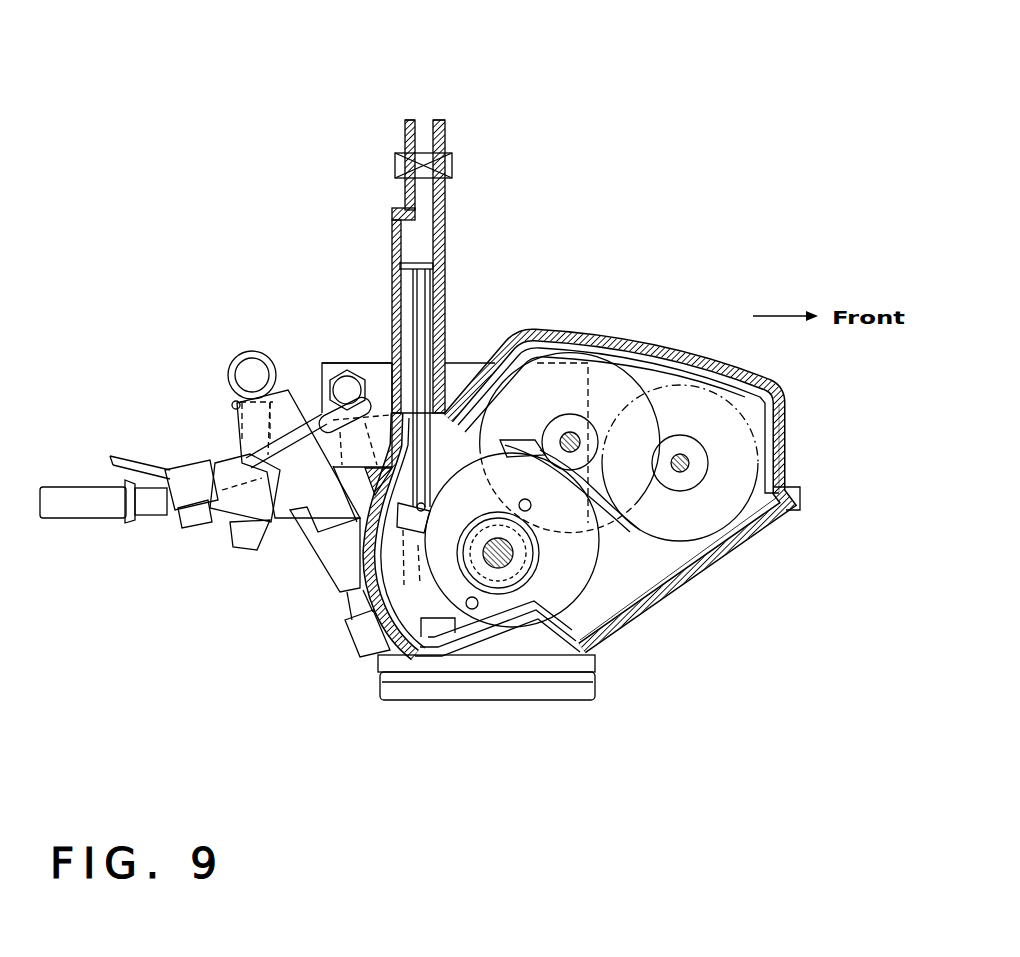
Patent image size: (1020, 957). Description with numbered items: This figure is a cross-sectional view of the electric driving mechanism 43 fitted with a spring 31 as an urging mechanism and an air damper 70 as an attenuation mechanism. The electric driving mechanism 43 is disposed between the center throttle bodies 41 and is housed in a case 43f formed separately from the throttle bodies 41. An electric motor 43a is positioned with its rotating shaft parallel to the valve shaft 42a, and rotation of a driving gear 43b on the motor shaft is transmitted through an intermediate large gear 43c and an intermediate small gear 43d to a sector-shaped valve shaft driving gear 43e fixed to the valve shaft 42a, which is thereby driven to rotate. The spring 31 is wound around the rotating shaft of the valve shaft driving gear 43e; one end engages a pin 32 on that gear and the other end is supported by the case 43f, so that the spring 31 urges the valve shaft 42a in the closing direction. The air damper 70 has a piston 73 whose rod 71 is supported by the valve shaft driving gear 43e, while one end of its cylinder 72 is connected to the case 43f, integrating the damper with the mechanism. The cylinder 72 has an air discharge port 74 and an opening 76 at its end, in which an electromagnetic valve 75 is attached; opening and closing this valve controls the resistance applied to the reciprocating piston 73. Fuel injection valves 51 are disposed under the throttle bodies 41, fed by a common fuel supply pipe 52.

The spring 31 is at (568, 693).
The pin 32 is at (598, 697).
The throttle body 41 is at (372, 684).
The valve shaft 42a is at (498, 575).
The electric driving mechanism 43 is at (700, 356).
The electric motor 43a is at (672, 545).
The driving gear 43b is at (742, 535).
The intermediate large gear 43c is at (533, 332).
The intermediate small gear 43d is at (495, 352).
The valve shaft driving gear 43e is at (627, 627).
The case 43f is at (635, 343).
The fuel injection valve 51 is at (310, 558).
The fuel supply pipe 52 is at (242, 349).
The air damper 70 is at (390, 242).
The rod 71 is at (392, 320).
The cylinder 72 is at (385, 274).
The piston 73 is at (440, 227).
The air discharge port 74 is at (394, 200).
The electromagnetic valve 75 is at (452, 165).
The opening 76 is at (427, 114).